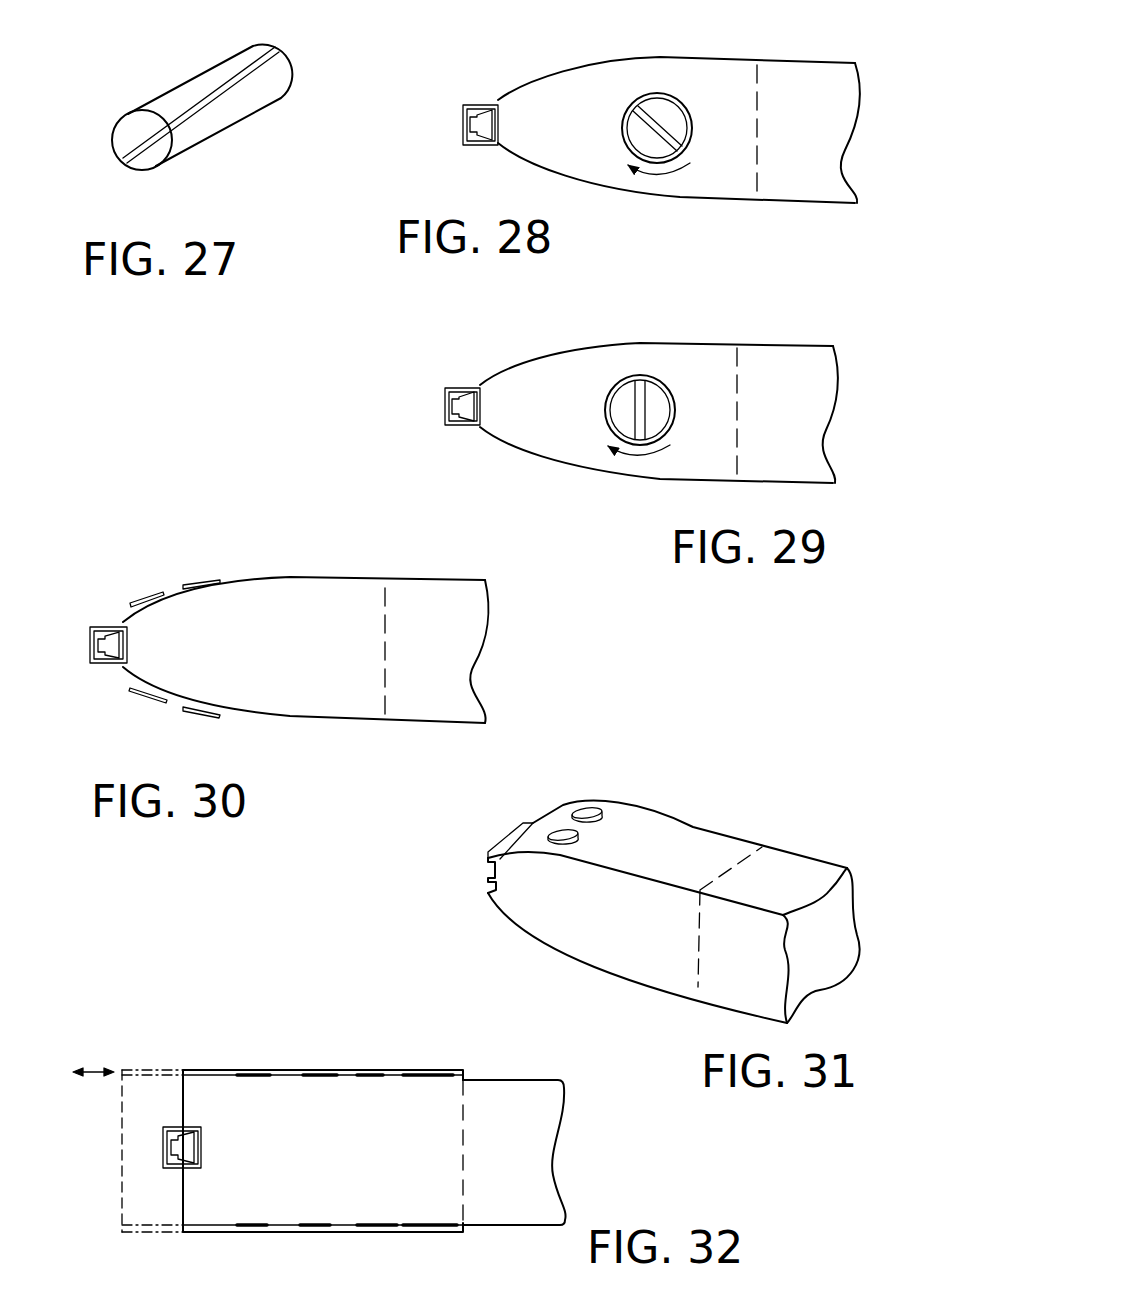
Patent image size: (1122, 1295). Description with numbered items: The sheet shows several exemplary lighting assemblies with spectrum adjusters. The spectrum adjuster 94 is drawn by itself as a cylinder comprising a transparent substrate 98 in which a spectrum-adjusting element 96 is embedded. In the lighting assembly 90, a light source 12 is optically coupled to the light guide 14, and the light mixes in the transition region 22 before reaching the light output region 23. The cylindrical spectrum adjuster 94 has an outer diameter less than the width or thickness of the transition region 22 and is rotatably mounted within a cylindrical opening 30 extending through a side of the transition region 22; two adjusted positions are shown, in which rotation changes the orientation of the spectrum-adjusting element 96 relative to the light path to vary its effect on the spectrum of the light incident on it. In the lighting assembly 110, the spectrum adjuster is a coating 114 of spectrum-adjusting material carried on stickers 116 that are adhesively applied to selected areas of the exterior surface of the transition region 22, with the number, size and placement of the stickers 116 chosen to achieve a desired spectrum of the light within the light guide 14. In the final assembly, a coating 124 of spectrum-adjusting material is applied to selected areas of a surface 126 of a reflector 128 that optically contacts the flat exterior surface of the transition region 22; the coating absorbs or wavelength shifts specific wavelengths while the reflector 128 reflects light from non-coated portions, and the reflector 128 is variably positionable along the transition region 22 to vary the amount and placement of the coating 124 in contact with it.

In FIG. 28, the light source 12 is at (463, 125).
In FIG. 29, the light source 12 is at (445, 405).
In FIG. 30, the light source 12 is at (90, 637).
In FIG. 31, the light source 12 is at (490, 848).
In FIG. 32, the light source 12 is at (163, 1158).
In FIG. 29, the light guide 14 is at (793, 355).
In FIG. 30, the light guide 14 is at (438, 703).
In FIG. 31, the light guide 14 is at (823, 903).
In FIG. 32, the light guide 14 is at (536, 1110).
In FIG. 28, the transition region 22 is at (635, 70).
In FIG. 29, the transition region 22 is at (612, 350).
In FIG. 30, the transition region 22 is at (300, 700).
In FIG. 31, the transition region 22 is at (690, 833).
In FIG. 32, the transition region 22 is at (280, 1100).
In FIG. 31, the light output region 23 is at (807, 873).
In FIG. 32, the light output region 23 is at (537, 1082).
In FIG. 28, the cylindrical opening 30 is at (692, 127).
In FIG. 29, the cylindrical opening 30 is at (674, 410).
In FIG. 28, the lighting assembly 90 is at (622, 101).
In FIG. 29, the lighting assembly 90 is at (603, 379).
In FIG. 27, the spectrum adjuster 94 is at (138, 86).
In FIG. 28, the spectrum adjuster 94 is at (644, 121).
In FIG. 29, the spectrum adjuster 94 is at (625, 411).
In FIG. 27, the spectrum-adjusting element 96 is at (231, 72).
In FIG. 28, the spectrum-adjusting element 96 is at (652, 118).
In FIG. 29, the spectrum-adjusting element 96 is at (643, 403).
In FIG. 27, the transparent substrate 98 is at (236, 113).
In FIG. 28, the transparent substrate 98 is at (643, 140).
In FIG. 29, the transparent substrate 98 is at (626, 418).
In FIG. 30, the lighting assembly 110 is at (268, 646).
In FIG. 31, the lighting assembly 110 is at (677, 869).
In FIG. 32, the lighting assembly 110 is at (341, 1108).
In FIG. 30, the coating of spectrum-adjusting material 114 is at (174, 611).
In FIG. 31, the coating of spectrum-adjusting material 114 is at (608, 799).
In FIG. 30, the stickers 116 is at (207, 633).
In FIG. 31, the stickers 116 is at (582, 808).
In FIG. 32, the coating of spectrum-adjusting material 124 is at (370, 1080).
In FIG. 32, the surface of the reflector 126 is at (340, 1078).
In FIG. 32, the reflector 128 is at (323, 1105).